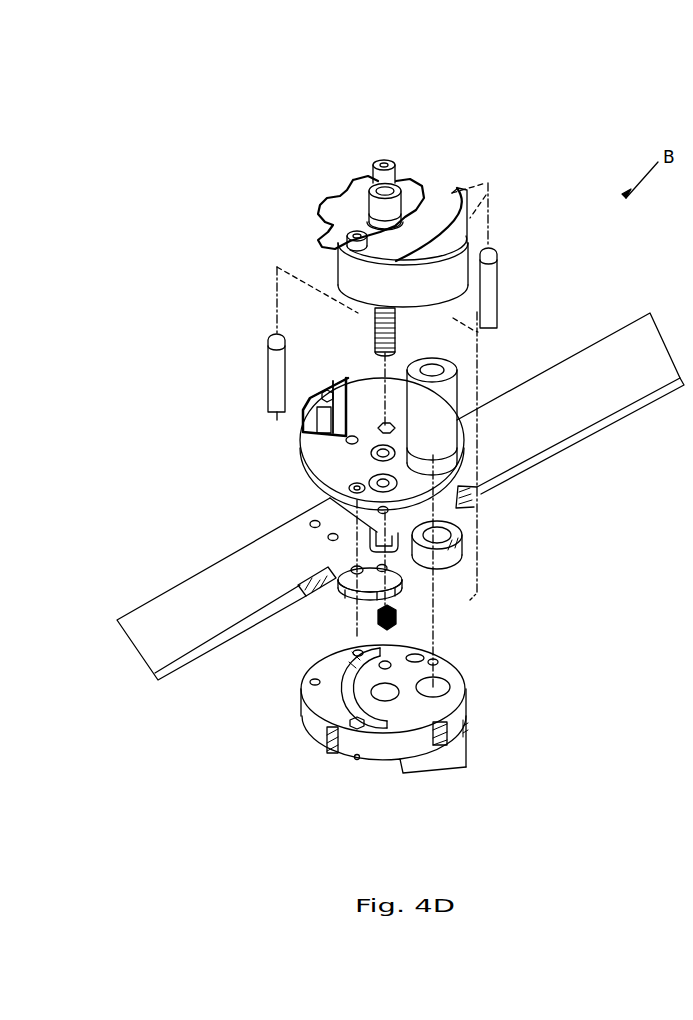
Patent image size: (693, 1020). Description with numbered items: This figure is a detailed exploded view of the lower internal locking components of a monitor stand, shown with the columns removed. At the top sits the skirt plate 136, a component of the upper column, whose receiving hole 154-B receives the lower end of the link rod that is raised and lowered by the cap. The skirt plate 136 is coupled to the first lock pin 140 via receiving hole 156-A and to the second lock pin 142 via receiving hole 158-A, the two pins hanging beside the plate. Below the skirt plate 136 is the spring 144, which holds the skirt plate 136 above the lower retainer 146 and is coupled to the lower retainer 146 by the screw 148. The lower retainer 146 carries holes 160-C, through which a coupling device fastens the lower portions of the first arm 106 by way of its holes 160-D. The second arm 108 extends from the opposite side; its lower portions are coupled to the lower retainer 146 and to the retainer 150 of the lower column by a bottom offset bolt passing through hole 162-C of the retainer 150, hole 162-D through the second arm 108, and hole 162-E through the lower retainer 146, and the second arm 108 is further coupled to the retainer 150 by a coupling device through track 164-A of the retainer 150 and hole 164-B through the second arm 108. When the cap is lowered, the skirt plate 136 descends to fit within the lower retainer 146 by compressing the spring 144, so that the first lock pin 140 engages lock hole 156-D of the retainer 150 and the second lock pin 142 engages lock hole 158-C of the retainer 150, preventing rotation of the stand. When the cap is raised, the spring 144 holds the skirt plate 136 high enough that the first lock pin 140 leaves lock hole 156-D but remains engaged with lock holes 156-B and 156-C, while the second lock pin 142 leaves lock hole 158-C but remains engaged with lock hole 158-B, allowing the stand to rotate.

The first arm 106 is at (193, 600).
The second arm 108 is at (635, 347).
The skirt plate 136 is at (347, 217).
The first lock pin 140 is at (275, 368).
The second lock pin 142 is at (487, 282).
The spring 144 is at (373, 328).
The lower retainer 146 is at (432, 477).
The screw 148 is at (397, 617).
The retainer 150 is at (457, 680).
The receiving hole 154-B is at (407, 185).
The receiving hole 156-A is at (353, 239).
The lock hole 156-B is at (373, 490).
The lock hole 156-C is at (352, 572).
The lock hole 156-D is at (357, 723).
The receiving hole 158-A is at (386, 162).
The lock hole 158-B is at (388, 428).
The lock hole 158-C is at (402, 662).
The holes 160-C is at (387, 483).
The holes 160-D is at (378, 567).
The hole 162-C is at (440, 688).
The hole 162-D is at (455, 543).
The hole 162-E is at (440, 413).
The track 164-A is at (345, 692).
The hole 164-B is at (388, 512).